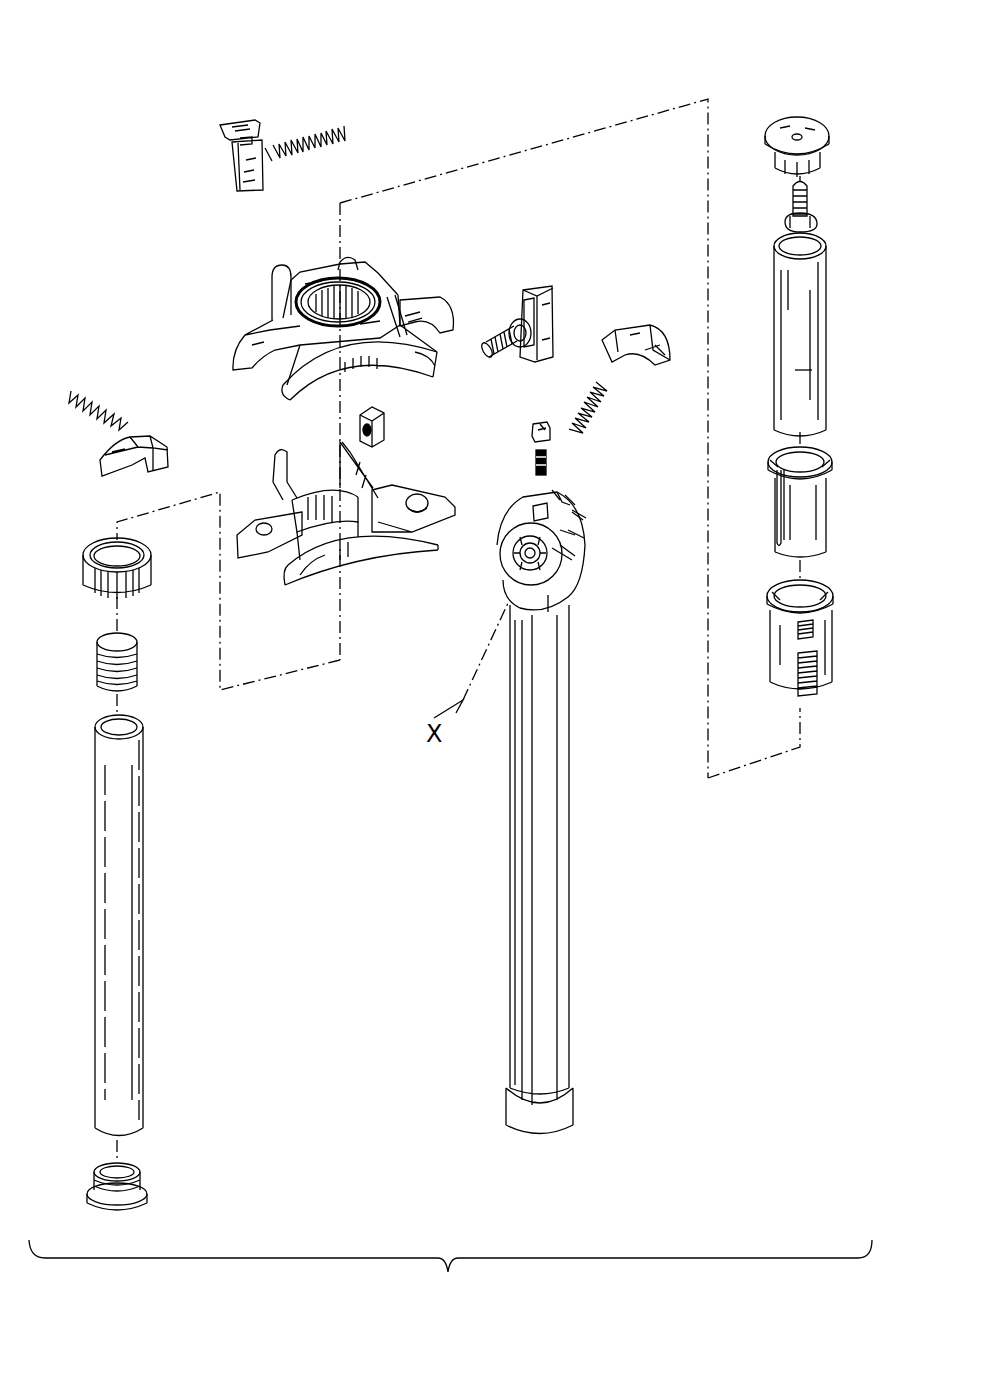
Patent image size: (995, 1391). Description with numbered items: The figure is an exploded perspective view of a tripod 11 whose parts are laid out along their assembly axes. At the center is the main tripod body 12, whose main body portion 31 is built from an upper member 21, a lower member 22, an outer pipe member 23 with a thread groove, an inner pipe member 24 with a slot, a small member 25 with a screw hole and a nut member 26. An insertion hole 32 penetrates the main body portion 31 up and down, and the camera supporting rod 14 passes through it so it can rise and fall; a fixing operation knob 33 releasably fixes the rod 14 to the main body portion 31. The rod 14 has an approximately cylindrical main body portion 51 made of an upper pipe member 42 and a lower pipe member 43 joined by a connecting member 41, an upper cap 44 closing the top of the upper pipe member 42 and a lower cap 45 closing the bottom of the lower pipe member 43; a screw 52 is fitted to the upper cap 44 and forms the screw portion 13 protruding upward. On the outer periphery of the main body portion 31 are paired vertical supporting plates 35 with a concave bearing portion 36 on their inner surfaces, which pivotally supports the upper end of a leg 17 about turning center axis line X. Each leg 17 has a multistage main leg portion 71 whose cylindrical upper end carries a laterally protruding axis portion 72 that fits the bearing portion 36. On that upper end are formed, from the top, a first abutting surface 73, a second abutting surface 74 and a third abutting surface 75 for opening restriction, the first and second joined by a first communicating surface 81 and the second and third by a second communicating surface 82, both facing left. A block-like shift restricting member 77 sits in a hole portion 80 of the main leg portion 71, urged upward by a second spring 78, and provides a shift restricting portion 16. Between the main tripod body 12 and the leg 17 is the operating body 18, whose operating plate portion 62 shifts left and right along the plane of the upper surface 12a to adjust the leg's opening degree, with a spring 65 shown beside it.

The tripod 11 is at (185, 62).
The main tripod body 12 is at (165, 240).
The upper surface 12a is at (394, 303).
The screw portion 13 is at (808, 196).
The camera supporting rod 14 is at (113, 878).
The shift restricting portion 16 is at (532, 436).
The leg 17 is at (559, 793).
The operating body 18 is at (262, 120).
The upper member 21 is at (298, 280).
The lower member 22 is at (360, 562).
The outer pipe member 23 is at (822, 646).
The inner pipe member 24 is at (818, 516).
The small member 25 is at (384, 428).
The nut member 26 is at (83, 576).
The main body portion 31 is at (330, 358).
The insertion hole 32 is at (330, 288).
The fixing operation knob 33 is at (535, 290).
The supporting plates 35 is at (350, 260).
The bearing portion 36 is at (420, 340).
The connecting member 41 is at (98, 672).
The upper pipe member 42 is at (815, 333).
The lower pipe member 43 is at (140, 815).
The upper cap 44 is at (831, 133).
The lower cap 45 is at (149, 1200).
The main body portion 51 is at (814, 380).
The screw 52 is at (817, 226).
The operating plate portion 62 is at (640, 362).
The spring 65 is at (328, 136).
The main leg portion 71 is at (560, 805).
The axis portion 72 is at (546, 536).
The first abutting surface 73 is at (560, 492).
The second abutting surface 74 is at (580, 518).
The third abutting surface 75 is at (574, 548).
The shift restricting member 77 is at (541, 422).
The second spring 78 is at (534, 464).
The hole portion 80 is at (530, 505).
The first communicating surface 81 is at (572, 500).
The second communicating surface 82 is at (578, 532).